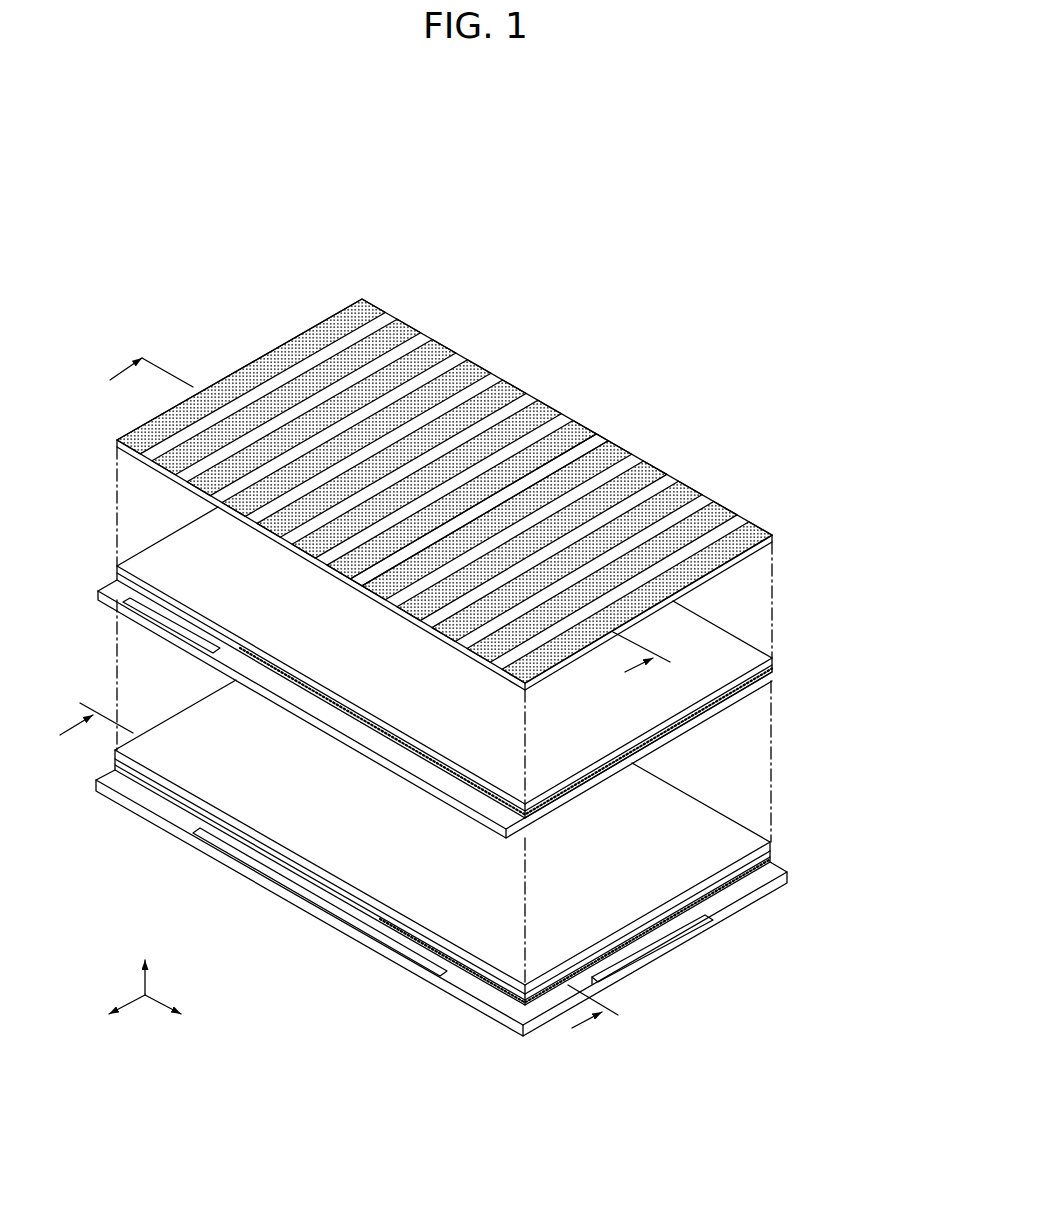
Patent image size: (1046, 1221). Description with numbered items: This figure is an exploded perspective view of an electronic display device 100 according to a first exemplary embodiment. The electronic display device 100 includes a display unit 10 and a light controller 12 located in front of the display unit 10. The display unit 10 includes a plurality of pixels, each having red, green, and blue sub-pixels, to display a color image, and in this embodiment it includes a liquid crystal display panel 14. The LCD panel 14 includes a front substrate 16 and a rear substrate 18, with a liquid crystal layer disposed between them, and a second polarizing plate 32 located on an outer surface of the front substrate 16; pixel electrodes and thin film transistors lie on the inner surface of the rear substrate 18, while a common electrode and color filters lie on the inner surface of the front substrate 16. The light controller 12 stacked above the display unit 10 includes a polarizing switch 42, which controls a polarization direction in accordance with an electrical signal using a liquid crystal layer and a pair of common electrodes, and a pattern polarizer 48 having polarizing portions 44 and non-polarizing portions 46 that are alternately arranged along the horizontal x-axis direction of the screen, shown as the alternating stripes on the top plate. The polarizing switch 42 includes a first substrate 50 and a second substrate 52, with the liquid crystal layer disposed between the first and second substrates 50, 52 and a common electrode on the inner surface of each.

The electronic display device 100 is at (533, 287).
The light controller 12 is at (840, 522).
The pattern polarizer 48 is at (781, 536).
The polarizing portion 44 is at (523, 392).
The non-polarizing portion 46 is at (598, 436).
The polarizing switch 42 is at (781, 657).
The second substrate 52 is at (178, 546).
The first substrate 50 is at (108, 600).
The second polarizing plate 32 is at (695, 828).
The front substrate 16 is at (778, 857).
The rear substrate 18 is at (750, 892).
The liquid crystal display (LCD) panel 14 is at (673, 963).
The display unit 10 is at (461, 1010).